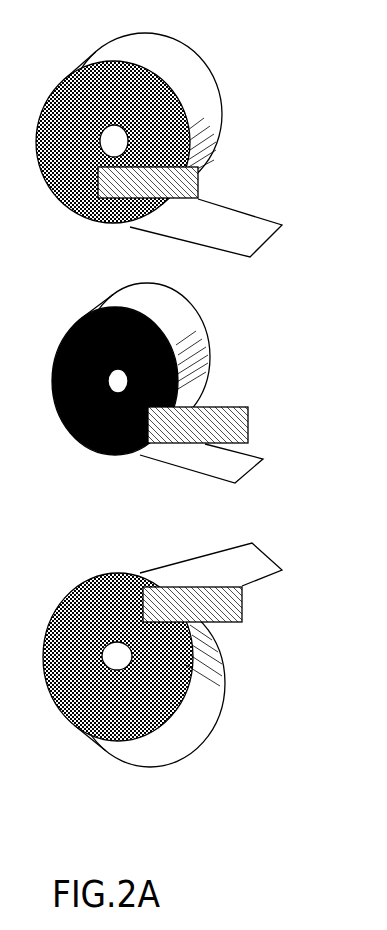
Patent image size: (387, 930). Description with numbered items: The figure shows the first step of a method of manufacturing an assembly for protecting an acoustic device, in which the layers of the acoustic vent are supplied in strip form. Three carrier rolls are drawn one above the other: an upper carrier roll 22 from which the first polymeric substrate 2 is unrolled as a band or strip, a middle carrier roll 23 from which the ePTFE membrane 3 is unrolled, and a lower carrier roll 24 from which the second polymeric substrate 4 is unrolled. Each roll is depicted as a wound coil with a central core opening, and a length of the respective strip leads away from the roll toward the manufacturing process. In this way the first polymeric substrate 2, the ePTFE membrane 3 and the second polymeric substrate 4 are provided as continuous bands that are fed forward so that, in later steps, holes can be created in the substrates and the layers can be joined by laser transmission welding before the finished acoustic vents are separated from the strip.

The carrier roll 22 is at (183, 77).
The first polymeric substrate 2 is at (266, 233).
The carrier roll 23 is at (170, 332).
The ePTFE membrane 3 is at (243, 465).
The carrier roll 24 is at (152, 747).
The second polymeric substrate 4 is at (258, 560).